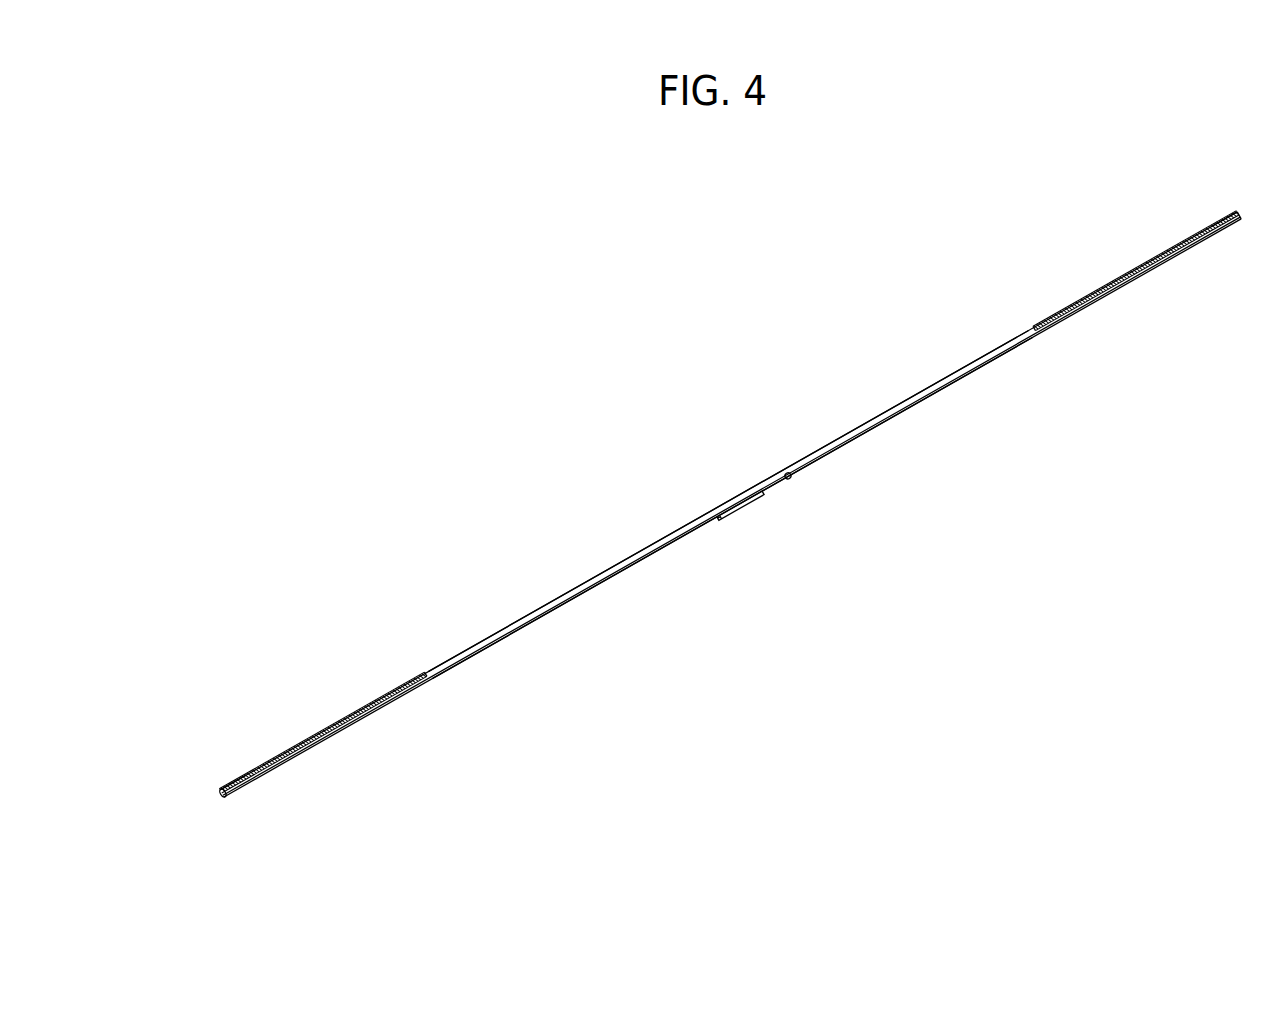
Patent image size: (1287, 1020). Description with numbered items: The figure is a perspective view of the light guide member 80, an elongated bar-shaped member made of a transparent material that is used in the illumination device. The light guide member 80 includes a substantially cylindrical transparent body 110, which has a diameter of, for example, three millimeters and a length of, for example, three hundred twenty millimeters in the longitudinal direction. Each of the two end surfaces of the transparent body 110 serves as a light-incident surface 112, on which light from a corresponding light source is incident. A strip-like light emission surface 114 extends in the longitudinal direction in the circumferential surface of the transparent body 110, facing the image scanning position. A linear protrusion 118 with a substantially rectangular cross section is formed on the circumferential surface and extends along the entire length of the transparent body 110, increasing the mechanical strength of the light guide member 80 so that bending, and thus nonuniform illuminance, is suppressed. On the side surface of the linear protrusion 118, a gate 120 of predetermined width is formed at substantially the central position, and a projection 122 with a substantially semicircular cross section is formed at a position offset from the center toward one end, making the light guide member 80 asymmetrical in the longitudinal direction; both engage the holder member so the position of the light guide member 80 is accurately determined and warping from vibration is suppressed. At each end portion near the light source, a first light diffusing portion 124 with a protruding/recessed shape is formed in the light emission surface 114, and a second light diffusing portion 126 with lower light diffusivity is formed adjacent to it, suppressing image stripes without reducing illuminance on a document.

The light guide member 80 is at (276, 408).
The transparent body 110 is at (503, 606).
The light-incident surface 112 is at (212, 792).
The light emission surface 114 is at (643, 542).
The linear protrusion 118 is at (597, 582).
The gate 120 is at (742, 503).
The projection 122 is at (789, 480).
The first light diffusing portion 124 is at (295, 743).
The second light diffusing portion 126 is at (410, 672).